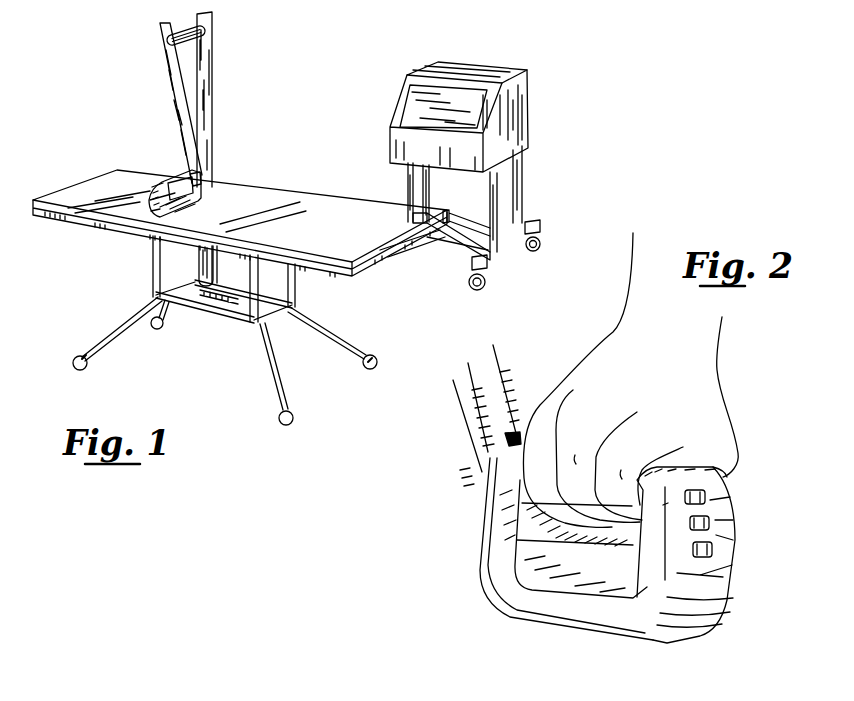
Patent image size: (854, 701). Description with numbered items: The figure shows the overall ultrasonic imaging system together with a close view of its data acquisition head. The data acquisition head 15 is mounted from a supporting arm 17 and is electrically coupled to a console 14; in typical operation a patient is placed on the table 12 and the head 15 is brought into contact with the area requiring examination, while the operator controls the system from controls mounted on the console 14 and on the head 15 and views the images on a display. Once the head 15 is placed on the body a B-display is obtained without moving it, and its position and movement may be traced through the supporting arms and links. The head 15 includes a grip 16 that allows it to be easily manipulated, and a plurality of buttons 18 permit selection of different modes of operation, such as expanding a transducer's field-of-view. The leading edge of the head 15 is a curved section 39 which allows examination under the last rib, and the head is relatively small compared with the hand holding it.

In FIG. 1, the table 12 is at (340, 215).
In FIG. 1, the console 14 is at (528, 122).
In FIG. 1, the data acquisition head 15 is at (215, 190).
In FIG. 2, the data acquisition head 15 is at (470, 586).
In FIG. 1, the grip 16 is at (176, 181).
In FIG. 2, the grip 16 is at (517, 435).
In FIG. 1, the supporting arm 17 is at (173, 78).
In FIG. 2, the supporting arm 17 is at (473, 433).
In FIG. 2, the buttons 18 is at (710, 521).
In FIG. 2, the curved section 39 is at (697, 636).